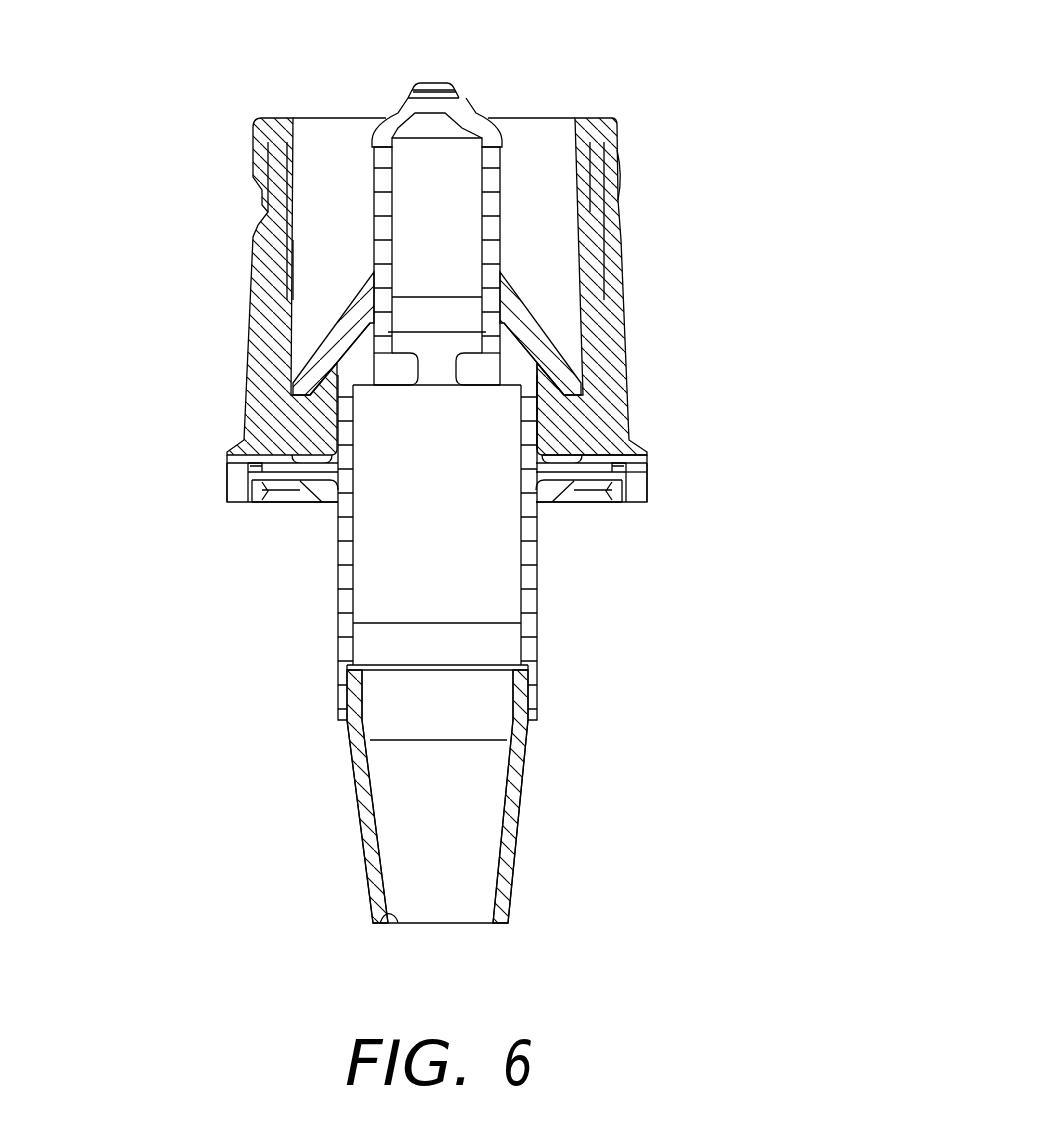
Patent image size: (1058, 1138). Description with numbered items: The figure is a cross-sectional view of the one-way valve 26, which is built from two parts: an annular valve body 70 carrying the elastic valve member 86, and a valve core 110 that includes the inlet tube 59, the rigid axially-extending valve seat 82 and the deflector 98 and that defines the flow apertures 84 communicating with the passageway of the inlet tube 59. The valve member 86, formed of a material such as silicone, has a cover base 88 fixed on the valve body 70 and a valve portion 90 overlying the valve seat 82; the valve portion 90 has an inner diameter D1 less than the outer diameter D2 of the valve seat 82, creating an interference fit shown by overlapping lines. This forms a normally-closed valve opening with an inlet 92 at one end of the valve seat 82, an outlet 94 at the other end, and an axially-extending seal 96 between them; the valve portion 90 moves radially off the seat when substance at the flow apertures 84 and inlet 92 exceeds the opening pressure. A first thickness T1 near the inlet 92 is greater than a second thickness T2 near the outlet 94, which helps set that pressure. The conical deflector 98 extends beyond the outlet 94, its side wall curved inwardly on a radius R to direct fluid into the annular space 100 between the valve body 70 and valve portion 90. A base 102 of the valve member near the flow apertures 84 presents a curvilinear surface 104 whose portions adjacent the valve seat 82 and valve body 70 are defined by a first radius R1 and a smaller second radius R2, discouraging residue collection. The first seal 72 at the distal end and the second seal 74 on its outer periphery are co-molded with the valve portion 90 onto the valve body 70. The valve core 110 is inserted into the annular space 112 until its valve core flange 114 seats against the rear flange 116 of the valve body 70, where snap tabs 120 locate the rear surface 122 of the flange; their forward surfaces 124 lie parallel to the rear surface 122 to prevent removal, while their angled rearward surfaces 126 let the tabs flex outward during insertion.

The one-way valve 26 is at (706, 76).
The inlet tube 59 is at (338, 668).
The valve body 70 is at (254, 415).
The first seal 72 is at (597, 117).
The second seal 74 is at (615, 134).
The valve seat 82 is at (393, 213).
The flow apertures 84 is at (552, 371).
The valve member 86 is at (292, 345).
The cover base 88 is at (320, 313).
The valve portion 90 is at (300, 255).
The inlet 92 is at (505, 345).
The outlet 94 is at (371, 138).
The axially-extending seal 96 is at (400, 223).
The deflector 98 is at (428, 83).
The annular space 100 is at (317, 173).
The base 102 is at (553, 340).
The curvilinear surface 104 is at (548, 265).
The valve core 110 is at (530, 423).
The annular space 112 is at (335, 410).
The valve core flange 114 is at (645, 471).
The rear flange 116 is at (247, 490).
The snap tabs 120 is at (282, 490).
The rear surface 122 is at (556, 505).
The forward surfaces 124 is at (604, 490).
The rearward surfaces 126 is at (638, 487).
The radius R is at (410, 108).
The first radius R1 is at (552, 290).
The second radius R2 is at (545, 292).
The inner diameter D1 is at (500, 312).
The outer diameter D2 is at (516, 182).
The first thickness T1 is at (584, 311).
The second thickness T2 is at (450, 157).